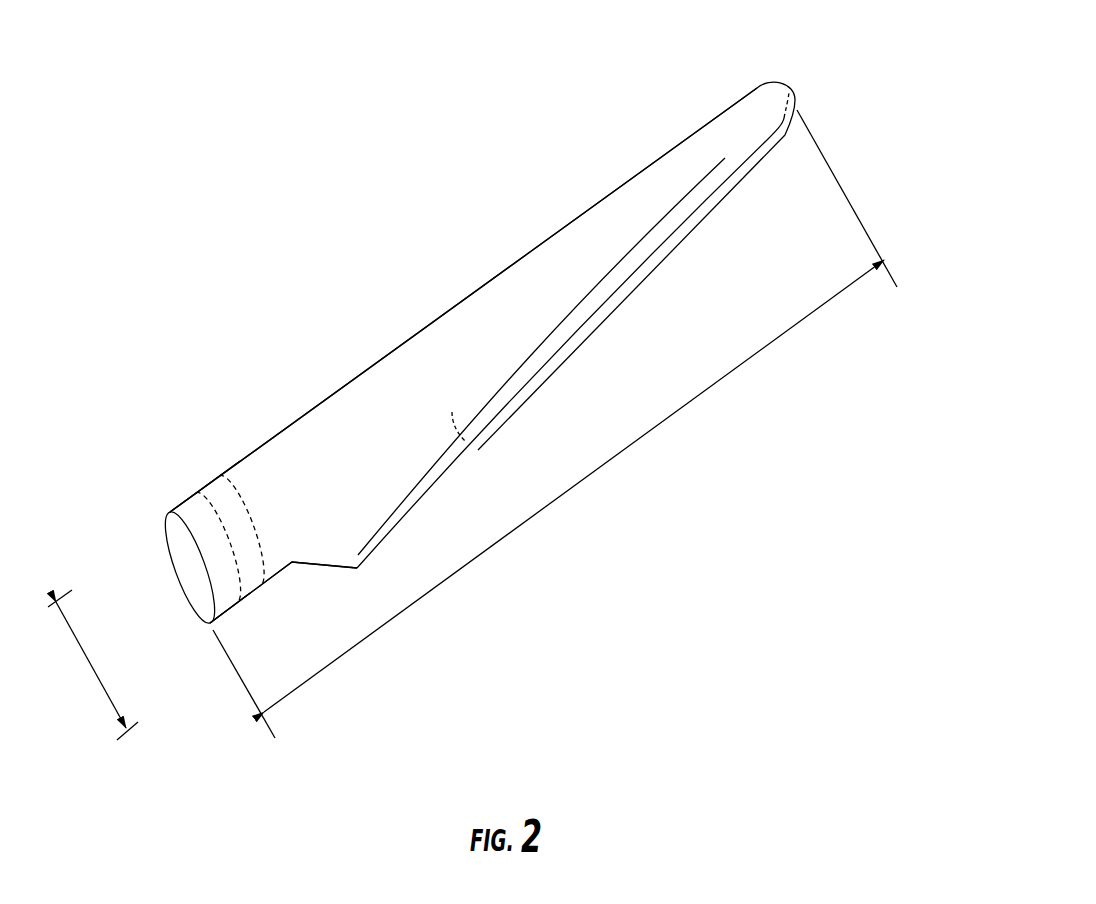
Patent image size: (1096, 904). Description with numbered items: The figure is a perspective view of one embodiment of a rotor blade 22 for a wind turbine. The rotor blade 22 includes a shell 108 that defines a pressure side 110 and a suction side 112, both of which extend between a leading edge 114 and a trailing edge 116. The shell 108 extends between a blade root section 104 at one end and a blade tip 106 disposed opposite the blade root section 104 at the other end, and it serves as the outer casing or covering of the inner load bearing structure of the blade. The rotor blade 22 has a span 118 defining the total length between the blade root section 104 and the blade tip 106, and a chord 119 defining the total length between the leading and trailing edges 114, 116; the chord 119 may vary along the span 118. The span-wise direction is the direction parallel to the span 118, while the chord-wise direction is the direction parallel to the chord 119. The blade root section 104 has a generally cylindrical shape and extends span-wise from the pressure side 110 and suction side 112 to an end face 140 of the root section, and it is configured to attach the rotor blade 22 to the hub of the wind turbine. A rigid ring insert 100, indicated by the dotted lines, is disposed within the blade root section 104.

The rotor blade 22 is at (437, 193).
The rigid ring insert 100 is at (215, 515).
The blade root section 104 is at (190, 497).
The blade tip 106 is at (789, 87).
The shell 108 is at (396, 498).
The pressure side 110 is at (475, 447).
The suction side 112 is at (376, 425).
The leading edge 114 is at (437, 326).
The trailing edge 116 is at (535, 385).
The span 118 is at (597, 470).
The chord 119 is at (92, 668).
The end face 140 is at (180, 575).